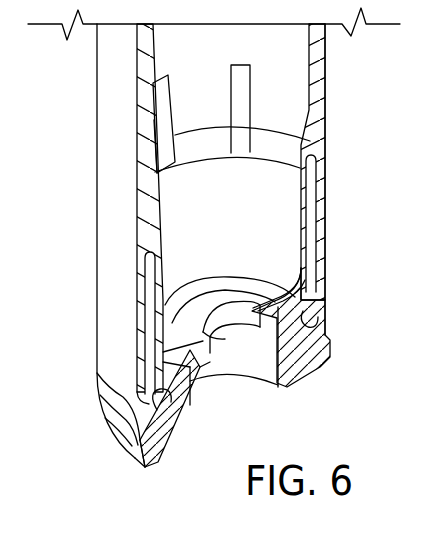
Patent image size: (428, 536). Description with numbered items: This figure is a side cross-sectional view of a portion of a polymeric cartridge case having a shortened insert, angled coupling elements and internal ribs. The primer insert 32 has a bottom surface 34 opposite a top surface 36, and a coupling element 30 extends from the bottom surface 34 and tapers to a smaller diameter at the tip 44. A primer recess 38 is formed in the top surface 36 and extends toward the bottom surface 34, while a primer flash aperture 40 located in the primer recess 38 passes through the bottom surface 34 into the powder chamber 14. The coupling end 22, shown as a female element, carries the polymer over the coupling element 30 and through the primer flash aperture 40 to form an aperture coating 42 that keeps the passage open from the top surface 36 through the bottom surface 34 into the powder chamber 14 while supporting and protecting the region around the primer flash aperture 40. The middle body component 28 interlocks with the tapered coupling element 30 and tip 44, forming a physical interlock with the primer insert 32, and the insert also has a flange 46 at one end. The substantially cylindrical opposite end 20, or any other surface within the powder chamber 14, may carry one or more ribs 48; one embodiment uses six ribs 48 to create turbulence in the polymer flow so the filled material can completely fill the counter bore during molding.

The powder chamber 14 is at (293, 61).
The substantially cylindrical opposite end 20 is at (173, 190).
The coupling end 22 is at (327, 167).
The middle body component 28 is at (96, 289).
The coupling element 30 is at (265, 209).
The primer insert 32 is at (124, 457).
The bottom surface 34 is at (320, 311).
The top surface 36 is at (163, 460).
The primer recess 38 is at (266, 372).
The primer flash aperture 40 is at (241, 312).
The aperture coating 42 is at (198, 356).
The tip 44 is at (317, 148).
The flange 46 is at (118, 420).
The ribs 48 is at (165, 84).